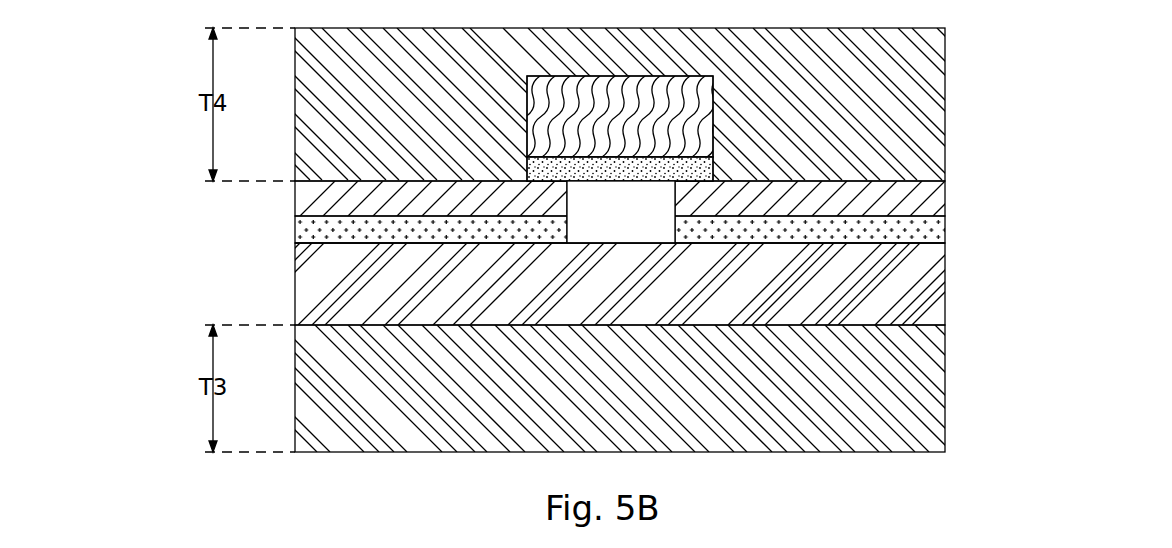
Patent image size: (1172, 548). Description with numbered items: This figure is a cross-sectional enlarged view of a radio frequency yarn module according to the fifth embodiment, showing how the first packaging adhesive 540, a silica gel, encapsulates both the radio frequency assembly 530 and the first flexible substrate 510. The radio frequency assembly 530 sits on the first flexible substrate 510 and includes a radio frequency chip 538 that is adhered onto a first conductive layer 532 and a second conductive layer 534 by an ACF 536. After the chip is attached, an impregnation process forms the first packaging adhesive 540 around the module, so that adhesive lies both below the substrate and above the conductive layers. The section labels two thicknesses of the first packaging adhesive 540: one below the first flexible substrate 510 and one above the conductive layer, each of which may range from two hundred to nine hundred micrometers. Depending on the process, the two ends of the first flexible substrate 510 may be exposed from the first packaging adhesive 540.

The first flexible substrate 510 is at (915, 289).
The radio frequency assembly 530 is at (725, 146).
The first conductive layer 532 is at (548, 197).
The second conductive layer 534 is at (913, 199).
The ACF 536 is at (540, 168).
The radio frequency chip 538 is at (685, 108).
The first packaging adhesive 540 is at (913, 55).